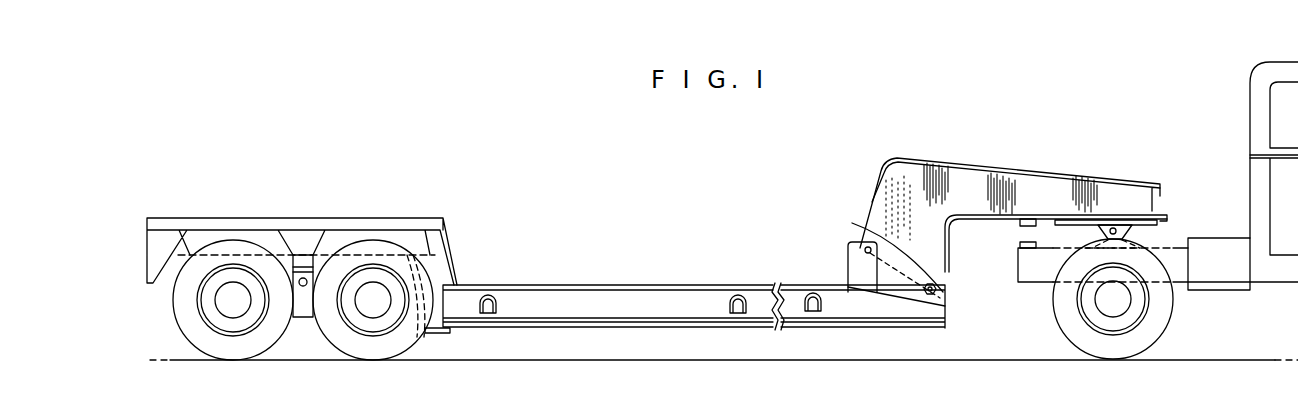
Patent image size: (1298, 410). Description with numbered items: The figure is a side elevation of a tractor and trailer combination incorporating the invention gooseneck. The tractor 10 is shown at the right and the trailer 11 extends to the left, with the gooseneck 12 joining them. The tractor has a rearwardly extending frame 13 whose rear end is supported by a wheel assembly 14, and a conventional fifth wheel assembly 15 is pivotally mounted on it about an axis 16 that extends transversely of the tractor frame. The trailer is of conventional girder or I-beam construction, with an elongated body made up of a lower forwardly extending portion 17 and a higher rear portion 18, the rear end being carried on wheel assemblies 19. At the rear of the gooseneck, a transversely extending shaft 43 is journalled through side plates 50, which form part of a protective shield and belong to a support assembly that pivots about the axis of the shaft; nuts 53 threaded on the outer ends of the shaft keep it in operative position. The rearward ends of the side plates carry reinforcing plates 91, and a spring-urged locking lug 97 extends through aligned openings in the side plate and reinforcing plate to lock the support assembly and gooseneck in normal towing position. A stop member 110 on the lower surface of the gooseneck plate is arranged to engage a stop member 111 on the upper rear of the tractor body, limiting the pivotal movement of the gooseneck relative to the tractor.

The tractor 10 is at (1237, 297).
The trailer 11 is at (533, 284).
The gooseneck 12 is at (953, 160).
The frame 13 is at (1175, 255).
The wheel assembly 14 is at (1167, 307).
The fifth wheel assembly 15 is at (1088, 222).
The axis 16 is at (1128, 242).
The lower forwardly extending portion 17 is at (685, 283).
The higher rear portion 18 is at (280, 215).
The wheel assemblies 19 is at (330, 333).
The shaft 43 is at (943, 296).
The side plates 50 is at (885, 247).
The nuts 53 is at (937, 289).
The reinforcing plates 91 is at (856, 269).
The locking lug 97 is at (862, 250).
The stop member 110 is at (1020, 222).
The stop member 111 is at (1020, 248).